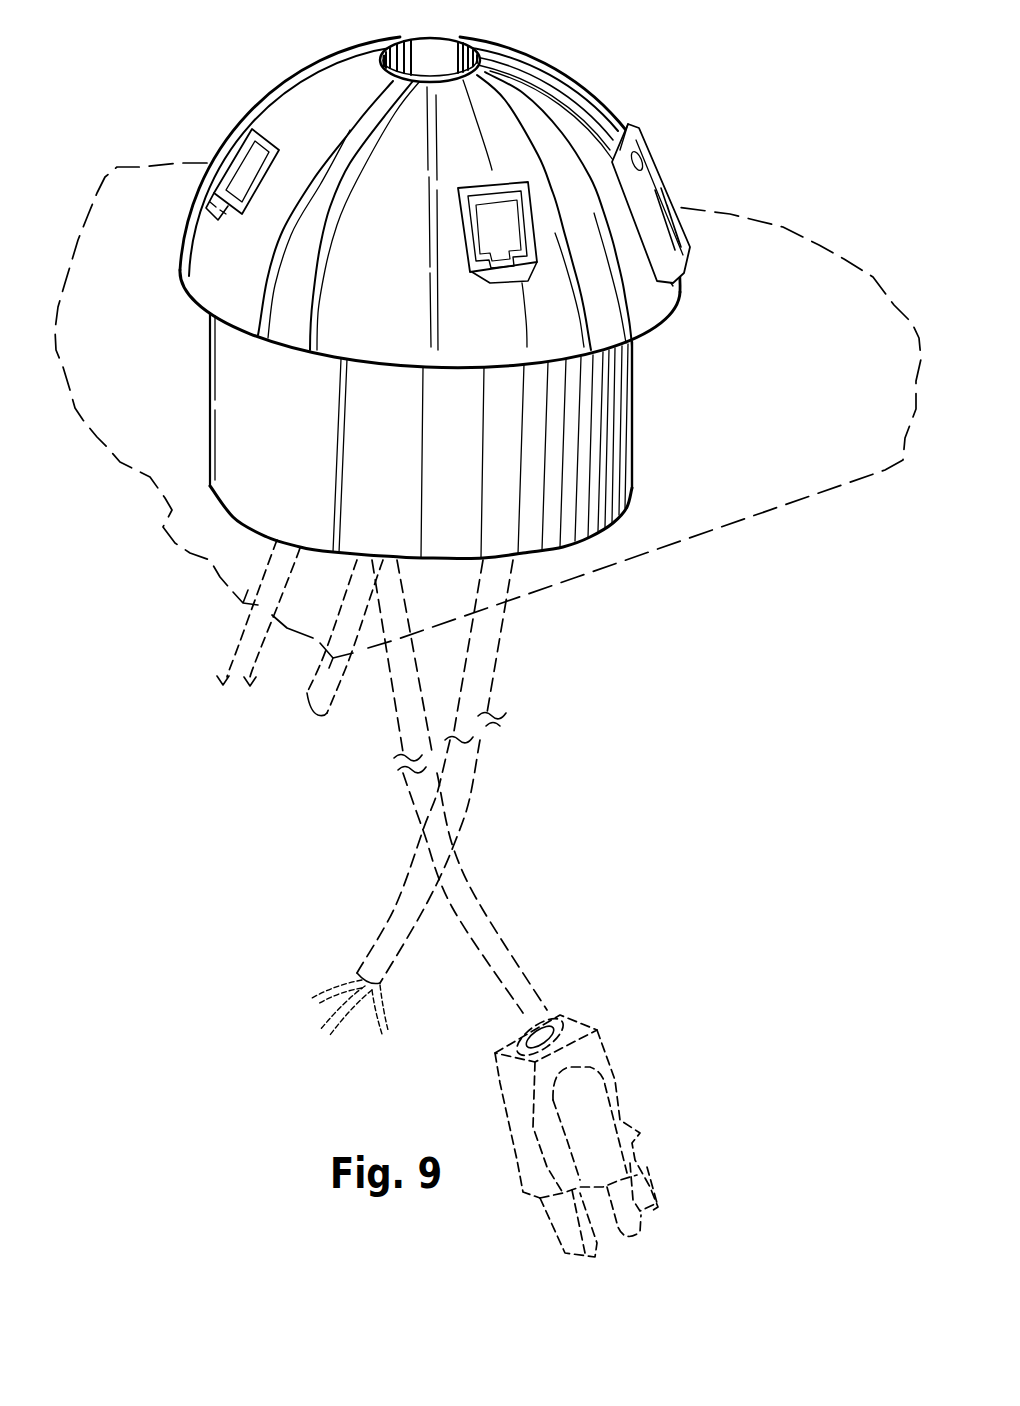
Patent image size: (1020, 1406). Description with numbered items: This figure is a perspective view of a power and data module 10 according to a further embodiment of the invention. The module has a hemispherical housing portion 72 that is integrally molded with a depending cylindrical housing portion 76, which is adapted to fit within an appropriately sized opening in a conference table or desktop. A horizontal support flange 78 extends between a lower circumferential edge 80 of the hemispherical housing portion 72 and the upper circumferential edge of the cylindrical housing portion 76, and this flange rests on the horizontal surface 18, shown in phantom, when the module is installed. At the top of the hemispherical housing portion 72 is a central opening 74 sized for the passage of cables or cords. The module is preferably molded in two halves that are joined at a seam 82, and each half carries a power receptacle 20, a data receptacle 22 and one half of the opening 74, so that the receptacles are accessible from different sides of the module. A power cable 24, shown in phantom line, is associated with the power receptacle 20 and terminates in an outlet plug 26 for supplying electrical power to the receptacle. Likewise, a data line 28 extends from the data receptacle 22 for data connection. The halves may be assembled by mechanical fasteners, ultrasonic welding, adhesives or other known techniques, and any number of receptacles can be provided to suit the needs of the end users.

The power and data module 10 is at (604, 74).
The horizontal surface 18 is at (768, 397).
The power receptacle 20 is at (640, 141).
The data receptacle 22 is at (238, 221).
The power cable 24 is at (493, 713).
The outlet plug 26 is at (587, 1013).
The data line 28 is at (300, 688).
The hemispherical housing portion 72 is at (288, 97).
The central opening 74 is at (444, 64).
The cylindrical housing portion 76 is at (208, 408).
The horizontal support flange 78 is at (210, 323).
The lower circumferential edge 80 is at (193, 302).
The seam 82 is at (337, 217).